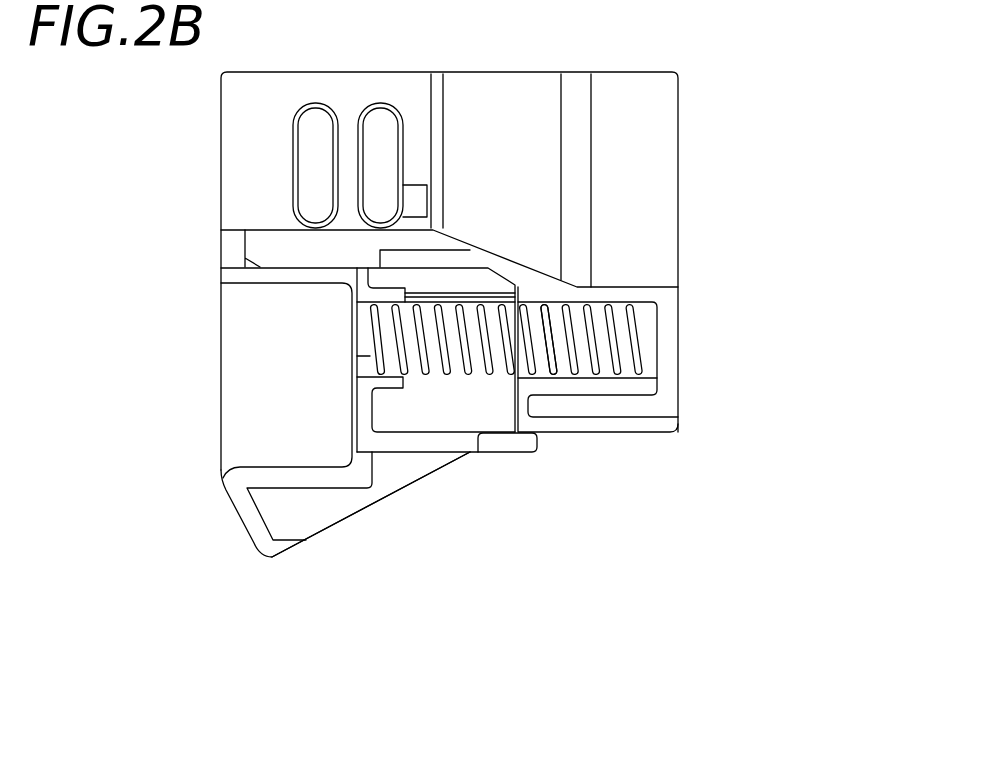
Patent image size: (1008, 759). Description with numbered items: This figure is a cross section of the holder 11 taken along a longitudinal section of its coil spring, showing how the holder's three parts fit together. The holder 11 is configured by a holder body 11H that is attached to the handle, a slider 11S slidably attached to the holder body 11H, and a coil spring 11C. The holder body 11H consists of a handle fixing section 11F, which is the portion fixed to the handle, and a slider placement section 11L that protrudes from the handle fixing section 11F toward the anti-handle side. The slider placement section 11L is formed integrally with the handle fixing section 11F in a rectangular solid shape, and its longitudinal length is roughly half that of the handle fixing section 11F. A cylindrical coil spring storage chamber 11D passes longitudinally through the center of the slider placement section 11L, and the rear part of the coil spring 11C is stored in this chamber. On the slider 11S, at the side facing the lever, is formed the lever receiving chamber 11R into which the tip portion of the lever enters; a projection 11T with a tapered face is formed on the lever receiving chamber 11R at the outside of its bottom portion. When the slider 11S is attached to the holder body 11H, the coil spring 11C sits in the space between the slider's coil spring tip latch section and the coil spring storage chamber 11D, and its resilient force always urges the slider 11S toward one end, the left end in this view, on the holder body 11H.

The holder 11 is at (592, 500).
The handle fixing section 11F is at (667, 224).
The holder body 11H is at (797, 202).
The slider placement section 11L is at (672, 363).
The lever receiving chamber 11R is at (258, 374).
The projection with a tapered face 11T is at (265, 559).
The slider 11S is at (343, 526).
The coil spring 11C is at (593, 370).
The coil spring storage chamber 11D is at (543, 373).